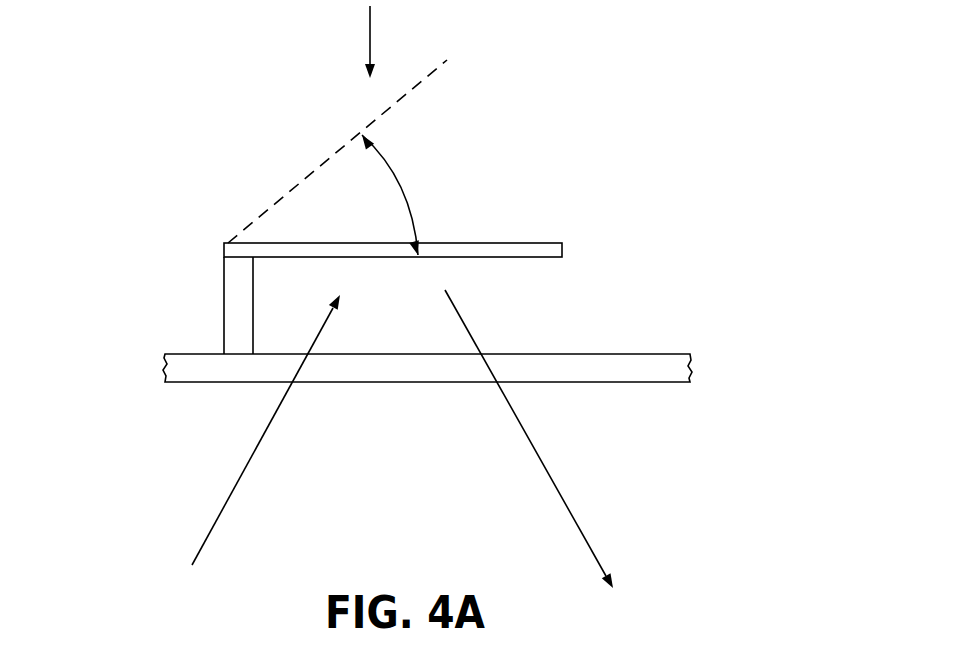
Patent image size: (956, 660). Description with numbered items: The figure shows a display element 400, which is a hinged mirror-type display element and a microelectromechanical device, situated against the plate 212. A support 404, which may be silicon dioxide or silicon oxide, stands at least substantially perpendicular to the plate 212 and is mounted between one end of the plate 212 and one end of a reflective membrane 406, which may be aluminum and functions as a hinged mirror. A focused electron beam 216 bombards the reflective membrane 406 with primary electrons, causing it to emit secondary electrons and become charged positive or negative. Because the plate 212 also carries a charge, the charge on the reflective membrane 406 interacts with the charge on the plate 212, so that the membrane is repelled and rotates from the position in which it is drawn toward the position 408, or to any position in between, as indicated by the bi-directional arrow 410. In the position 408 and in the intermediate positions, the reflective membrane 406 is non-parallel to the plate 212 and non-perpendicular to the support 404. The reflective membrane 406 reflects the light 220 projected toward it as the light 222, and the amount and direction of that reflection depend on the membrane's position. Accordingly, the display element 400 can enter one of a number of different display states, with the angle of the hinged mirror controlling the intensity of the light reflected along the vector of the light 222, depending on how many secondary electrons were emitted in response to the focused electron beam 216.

The display element 400 is at (110, 199).
The focused electron beam 216 is at (370, 27).
The position 408 is at (313, 170).
The bi-directional arrow 410 is at (390, 164).
The reflective membrane 406 is at (562, 250).
The support 404 is at (232, 289).
The plate 212 is at (692, 364).
The light 220 is at (222, 508).
The light 222 is at (573, 515).